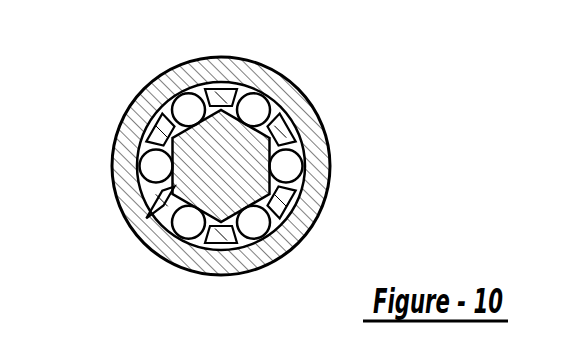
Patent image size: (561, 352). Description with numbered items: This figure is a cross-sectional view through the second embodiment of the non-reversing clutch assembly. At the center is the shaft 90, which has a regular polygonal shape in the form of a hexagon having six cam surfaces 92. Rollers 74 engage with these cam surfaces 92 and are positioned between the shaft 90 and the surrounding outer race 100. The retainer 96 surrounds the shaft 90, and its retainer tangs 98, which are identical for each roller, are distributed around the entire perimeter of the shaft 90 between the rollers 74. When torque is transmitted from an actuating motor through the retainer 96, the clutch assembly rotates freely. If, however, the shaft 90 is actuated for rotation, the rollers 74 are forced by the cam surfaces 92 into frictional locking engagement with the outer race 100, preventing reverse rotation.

The outer race 100 is at (148, 83).
The retainer 96 is at (150, 203).
The shaft 90 is at (233, 140).
The rollers 74 is at (155, 168).
The cam surfaces 92 is at (232, 212).
The retainer tangs 98 is at (160, 137).